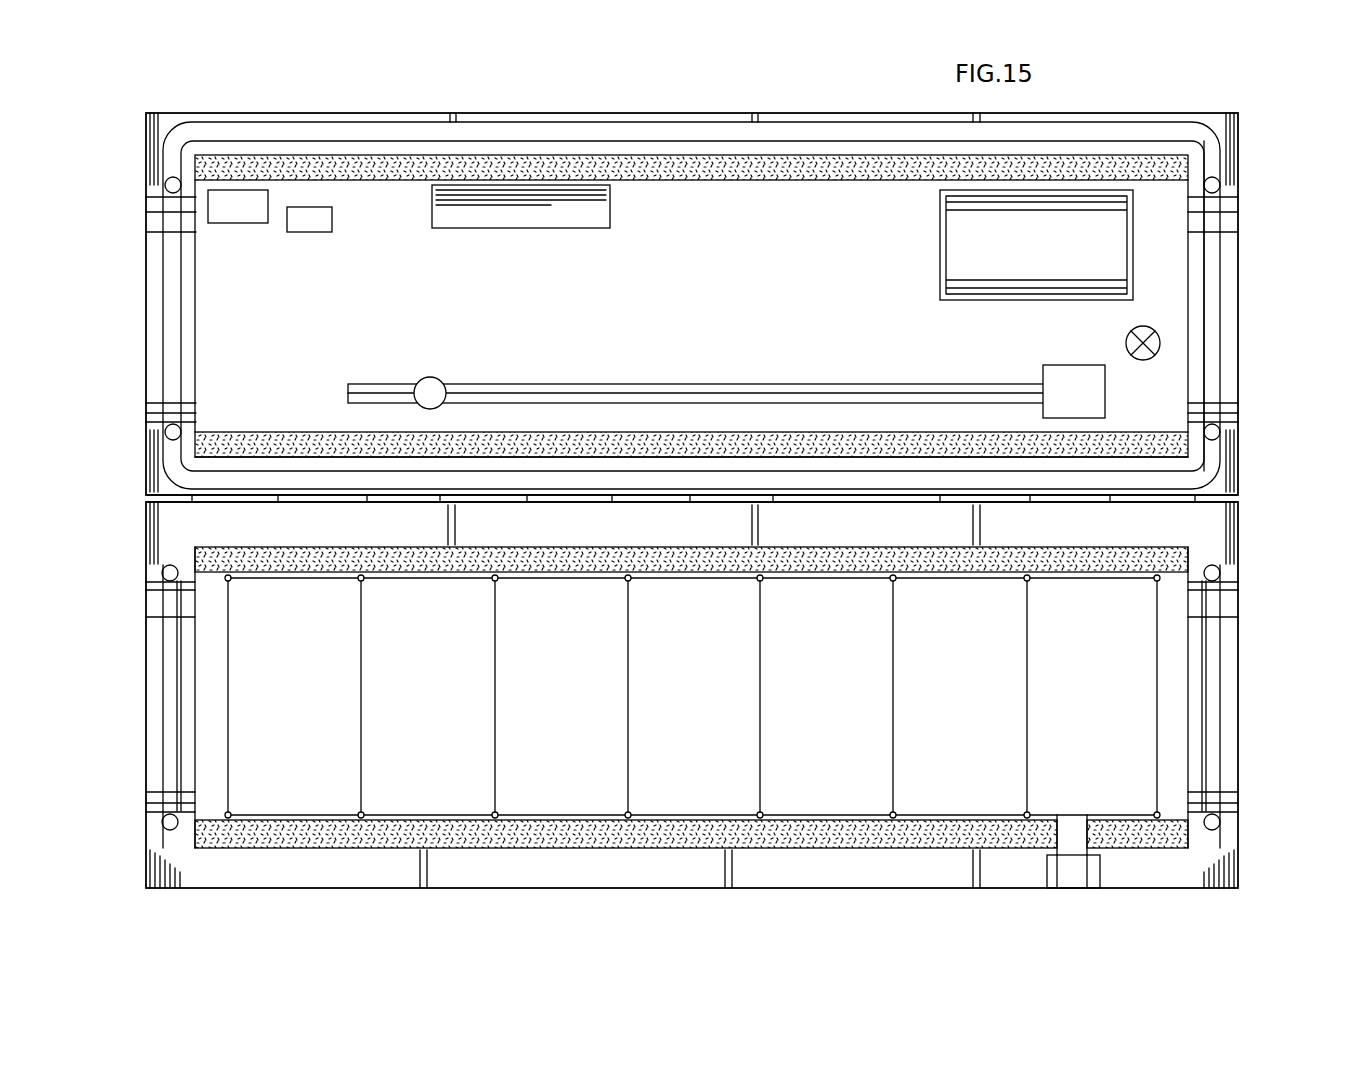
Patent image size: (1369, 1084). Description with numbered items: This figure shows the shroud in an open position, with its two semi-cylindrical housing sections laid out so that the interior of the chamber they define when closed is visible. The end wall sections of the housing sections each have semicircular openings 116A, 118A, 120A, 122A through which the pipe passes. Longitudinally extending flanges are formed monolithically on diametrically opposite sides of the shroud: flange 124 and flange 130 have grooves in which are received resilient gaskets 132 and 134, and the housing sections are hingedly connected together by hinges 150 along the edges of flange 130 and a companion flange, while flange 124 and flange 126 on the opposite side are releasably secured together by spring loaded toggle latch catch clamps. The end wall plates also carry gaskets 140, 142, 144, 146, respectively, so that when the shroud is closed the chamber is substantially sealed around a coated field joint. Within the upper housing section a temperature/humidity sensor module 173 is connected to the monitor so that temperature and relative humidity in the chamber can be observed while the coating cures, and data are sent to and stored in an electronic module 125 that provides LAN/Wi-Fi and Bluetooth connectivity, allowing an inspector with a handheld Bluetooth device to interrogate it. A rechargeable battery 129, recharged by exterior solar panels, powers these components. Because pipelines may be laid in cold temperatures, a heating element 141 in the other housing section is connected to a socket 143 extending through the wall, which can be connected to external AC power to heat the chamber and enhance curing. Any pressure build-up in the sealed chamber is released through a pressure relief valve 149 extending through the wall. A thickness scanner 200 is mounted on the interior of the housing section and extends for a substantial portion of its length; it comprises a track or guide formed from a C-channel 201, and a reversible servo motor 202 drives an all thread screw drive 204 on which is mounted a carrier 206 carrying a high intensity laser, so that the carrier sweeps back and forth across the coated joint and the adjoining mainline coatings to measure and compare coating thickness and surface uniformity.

The semicircular opening 116A is at (1232, 268).
The semicircular opening 118A is at (148, 322).
The semicircular opening 120A is at (1228, 660).
The semicircular opening 122A is at (152, 722).
The flange 124 is at (722, 118).
The electronic module 125 is at (521, 216).
The flange 126 is at (778, 880).
The rechargeable battery 129 is at (960, 238).
The flange 130 is at (728, 462).
The resilient gasket 132 is at (822, 128).
The resilient gasket 134 is at (600, 478).
The gasket 140 is at (1213, 222).
The heating element 141 is at (765, 705).
The gasket 142 is at (175, 250).
The socket 143 is at (1102, 885).
The gasket 144 is at (1210, 718).
The gasket 146 is at (172, 660).
The pressure relief valve 149 is at (1139, 358).
The hinge 150 is at (270, 497).
The temperature/humidity sensor module 173 is at (236, 214).
The thickness scanner 200 is at (726, 359).
The C-channel 201 is at (915, 390).
The servo motor 202 is at (1053, 388).
The all thread screw drive 204 is at (517, 392).
The carrier 206 is at (428, 388).